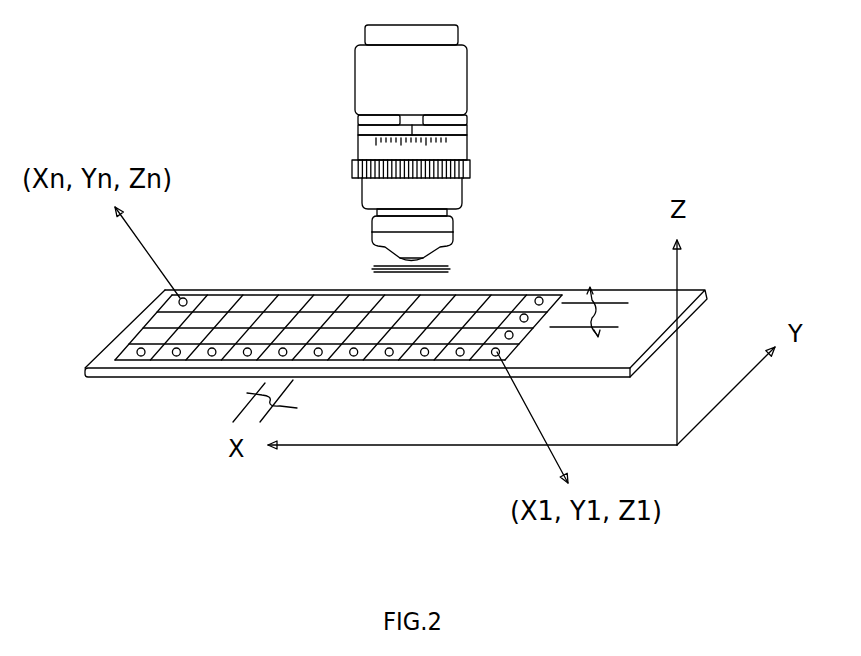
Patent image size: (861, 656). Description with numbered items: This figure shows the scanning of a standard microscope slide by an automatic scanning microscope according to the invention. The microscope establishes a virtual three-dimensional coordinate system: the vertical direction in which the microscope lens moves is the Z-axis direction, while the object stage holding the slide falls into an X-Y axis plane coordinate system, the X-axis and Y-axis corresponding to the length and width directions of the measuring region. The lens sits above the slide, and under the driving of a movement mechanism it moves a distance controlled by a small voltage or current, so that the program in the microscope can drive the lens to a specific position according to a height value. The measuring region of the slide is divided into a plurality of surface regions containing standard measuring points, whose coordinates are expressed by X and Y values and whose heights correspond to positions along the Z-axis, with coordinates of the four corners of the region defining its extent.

The automatic scanning microscope is at (360, 146).
The element lens is at (375, 267).
The standard microscope slide is at (463, 291).